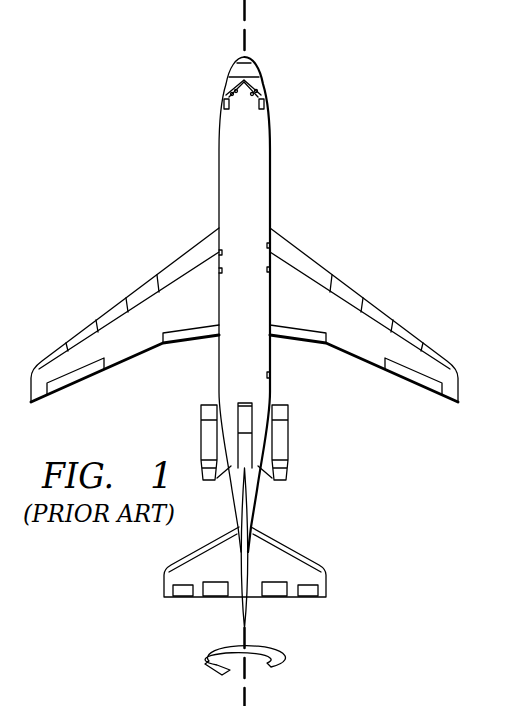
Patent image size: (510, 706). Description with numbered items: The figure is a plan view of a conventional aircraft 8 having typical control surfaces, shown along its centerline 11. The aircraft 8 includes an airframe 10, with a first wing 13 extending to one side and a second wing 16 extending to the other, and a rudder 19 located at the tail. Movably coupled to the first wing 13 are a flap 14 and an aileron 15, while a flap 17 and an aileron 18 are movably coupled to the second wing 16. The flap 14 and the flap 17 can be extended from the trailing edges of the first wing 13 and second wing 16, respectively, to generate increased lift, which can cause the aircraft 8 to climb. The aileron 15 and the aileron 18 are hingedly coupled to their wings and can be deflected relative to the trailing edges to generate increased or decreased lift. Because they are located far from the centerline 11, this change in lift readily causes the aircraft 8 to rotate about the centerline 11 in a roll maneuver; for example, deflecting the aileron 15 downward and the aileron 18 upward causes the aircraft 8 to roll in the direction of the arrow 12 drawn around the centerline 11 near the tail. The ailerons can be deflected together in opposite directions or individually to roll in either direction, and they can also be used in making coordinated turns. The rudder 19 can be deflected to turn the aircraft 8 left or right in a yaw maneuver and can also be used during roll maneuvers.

The aircraft 8 is at (378, 160).
The airframe 10 is at (268, 200).
The centerline 11 is at (243, 25).
The arrow 12 is at (210, 660).
The first wing 13 is at (125, 321).
The flap 14 is at (187, 336).
The aileron 15 is at (85, 381).
The second wing 16 is at (364, 320).
The flap 17 is at (302, 336).
The aileron 18 is at (410, 376).
The rudder 19 is at (255, 550).